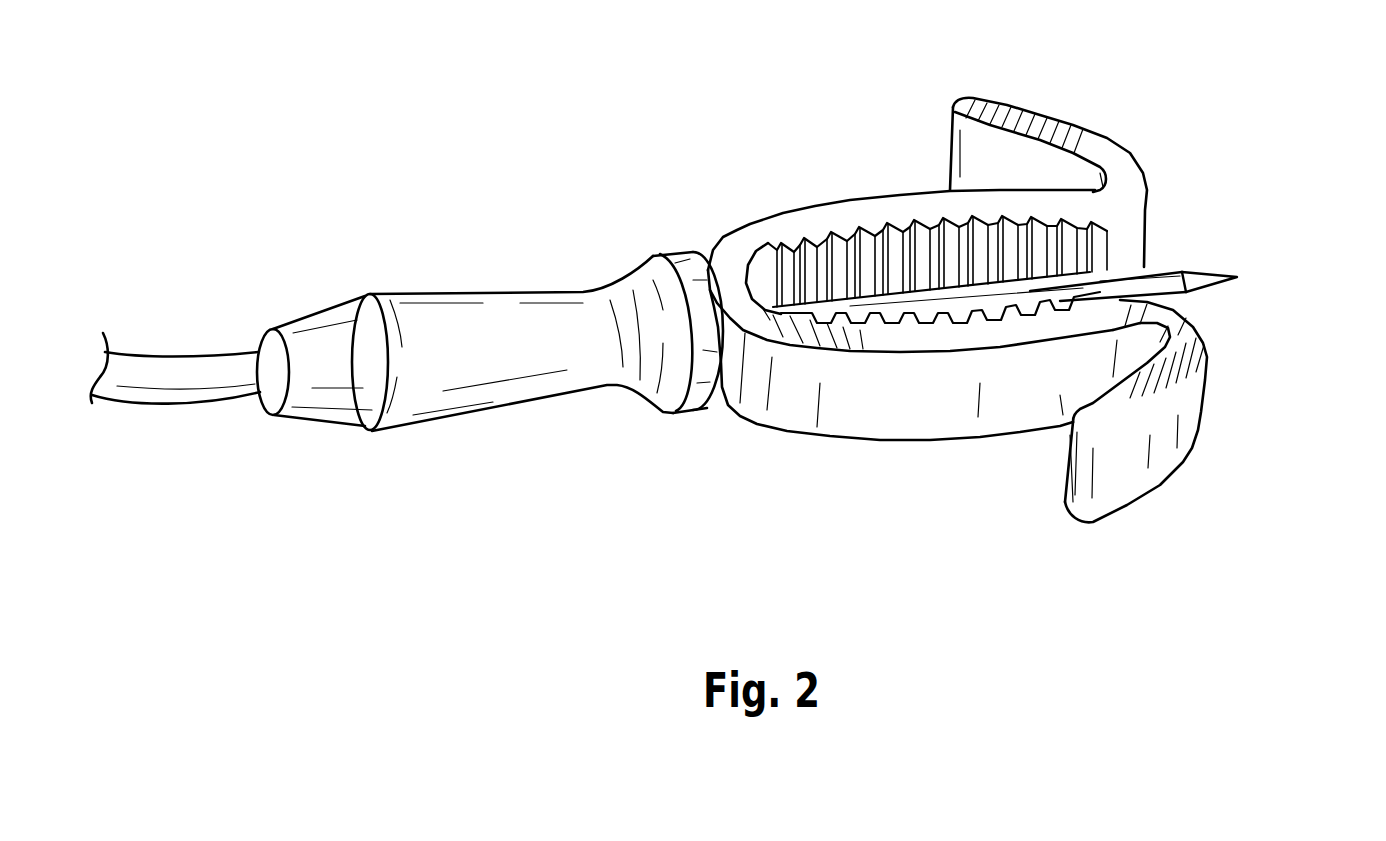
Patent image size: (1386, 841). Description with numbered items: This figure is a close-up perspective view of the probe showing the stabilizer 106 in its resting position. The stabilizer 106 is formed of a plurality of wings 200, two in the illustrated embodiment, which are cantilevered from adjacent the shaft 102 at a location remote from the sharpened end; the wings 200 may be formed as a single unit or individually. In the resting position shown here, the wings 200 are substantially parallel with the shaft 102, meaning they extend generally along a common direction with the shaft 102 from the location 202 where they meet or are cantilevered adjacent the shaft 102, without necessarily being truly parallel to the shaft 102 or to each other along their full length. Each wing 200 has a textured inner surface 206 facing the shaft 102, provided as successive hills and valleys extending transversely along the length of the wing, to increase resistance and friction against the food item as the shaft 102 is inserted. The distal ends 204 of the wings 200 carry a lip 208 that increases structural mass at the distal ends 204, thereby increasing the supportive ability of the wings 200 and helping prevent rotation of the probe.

The shaft 102 is at (1213, 250).
The stabilizer 106 is at (745, 487).
The wings 200 is at (870, 207).
The location 202 is at (693, 218).
The distal ends 204 is at (1165, 125).
The textured inner surface 206 is at (1088, 286).
The lip 208 is at (1018, 155).